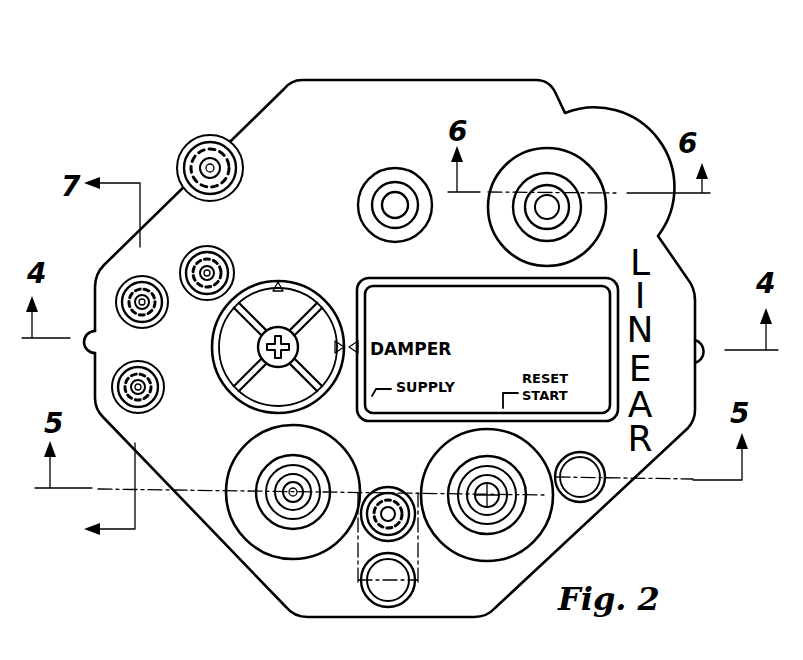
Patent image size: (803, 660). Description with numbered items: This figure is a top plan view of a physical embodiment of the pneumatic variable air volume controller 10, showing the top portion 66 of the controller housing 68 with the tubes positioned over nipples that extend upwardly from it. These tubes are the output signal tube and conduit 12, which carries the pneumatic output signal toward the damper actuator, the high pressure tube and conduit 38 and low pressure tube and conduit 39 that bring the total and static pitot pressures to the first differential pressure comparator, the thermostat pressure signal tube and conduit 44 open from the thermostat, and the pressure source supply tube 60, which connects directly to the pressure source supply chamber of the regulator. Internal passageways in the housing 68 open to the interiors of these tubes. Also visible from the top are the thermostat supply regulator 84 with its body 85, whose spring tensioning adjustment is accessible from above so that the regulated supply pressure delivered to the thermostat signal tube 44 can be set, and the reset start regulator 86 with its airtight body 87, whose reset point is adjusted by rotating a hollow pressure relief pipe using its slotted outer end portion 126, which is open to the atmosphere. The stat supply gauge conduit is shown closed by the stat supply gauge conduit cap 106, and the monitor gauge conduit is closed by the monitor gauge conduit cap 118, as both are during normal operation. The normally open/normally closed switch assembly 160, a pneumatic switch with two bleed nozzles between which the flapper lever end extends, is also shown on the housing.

The pneumatic variable air volume controller 10 is at (412, 50).
The output signal tube and conduit 12 is at (128, 282).
The high pressure tube and conduit 38 is at (217, 258).
The low pressure tube and conduit 39 is at (218, 145).
The thermostat pressure signal tube and conduit 44 is at (395, 490).
The pressure source supply tube 60 is at (120, 383).
The top portion 66 is at (334, 92).
The controller housing 68 is at (510, 78).
The thermostat supply regulator 84 is at (246, 438).
The supply regulator body 85 is at (245, 472).
The reset start regulator 86 is at (511, 568).
The airtight body 87 is at (527, 530).
The stat supply gauge conduit cap 106 is at (392, 592).
The monitor gauge conduit cap 118 is at (585, 483).
The slotted outer end portion 126 is at (488, 500).
The normally open/normally closed switch assembly 160 is at (322, 280).